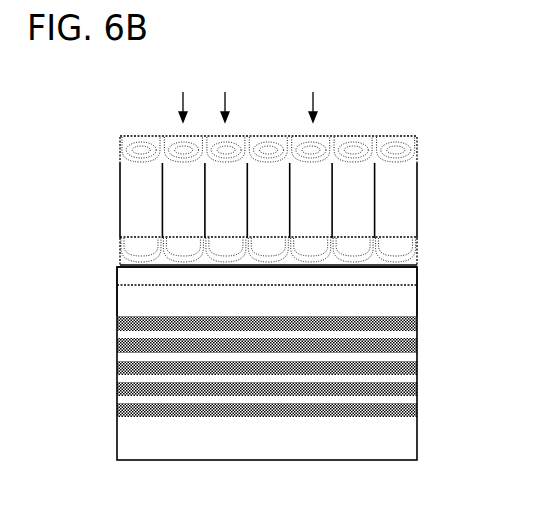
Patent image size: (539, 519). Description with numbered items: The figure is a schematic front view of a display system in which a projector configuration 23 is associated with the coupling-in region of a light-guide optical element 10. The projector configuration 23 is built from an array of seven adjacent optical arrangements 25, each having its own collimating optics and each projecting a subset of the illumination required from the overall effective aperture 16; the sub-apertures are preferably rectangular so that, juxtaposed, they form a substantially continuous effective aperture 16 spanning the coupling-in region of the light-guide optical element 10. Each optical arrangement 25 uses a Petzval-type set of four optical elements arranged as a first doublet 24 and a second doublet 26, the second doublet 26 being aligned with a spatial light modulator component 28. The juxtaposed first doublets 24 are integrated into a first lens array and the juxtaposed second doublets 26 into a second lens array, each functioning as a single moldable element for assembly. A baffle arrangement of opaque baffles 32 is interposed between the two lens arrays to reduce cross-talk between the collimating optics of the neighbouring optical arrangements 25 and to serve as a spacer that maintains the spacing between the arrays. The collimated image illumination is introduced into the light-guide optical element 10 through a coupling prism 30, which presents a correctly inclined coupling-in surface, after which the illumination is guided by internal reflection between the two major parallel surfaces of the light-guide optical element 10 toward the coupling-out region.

The light-guide optical element (LOE) 10 is at (417, 357).
The effective aperture 16 is at (417, 288).
The projector configuration 23 is at (92, 192).
The first doublet 24 is at (417, 243).
The optical arrangement 25 is at (248, 89).
The second doublet 26 is at (417, 161).
The spatial light modulator component 28 is at (417, 136).
The coupling prism 30 is at (417, 278).
The opaque baffles 32 is at (375, 213).